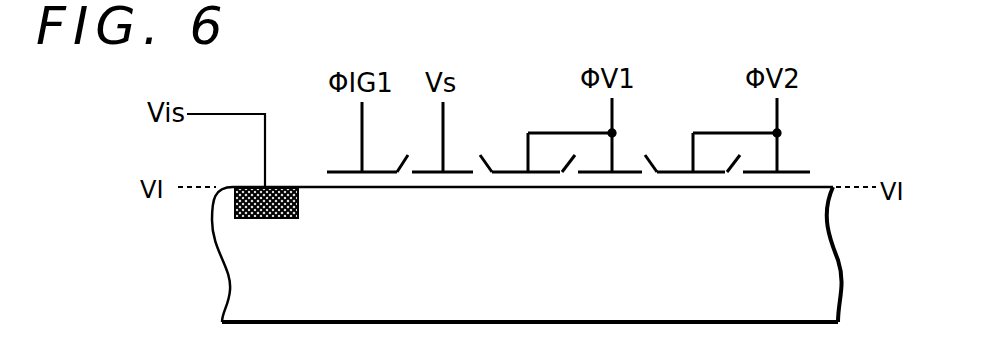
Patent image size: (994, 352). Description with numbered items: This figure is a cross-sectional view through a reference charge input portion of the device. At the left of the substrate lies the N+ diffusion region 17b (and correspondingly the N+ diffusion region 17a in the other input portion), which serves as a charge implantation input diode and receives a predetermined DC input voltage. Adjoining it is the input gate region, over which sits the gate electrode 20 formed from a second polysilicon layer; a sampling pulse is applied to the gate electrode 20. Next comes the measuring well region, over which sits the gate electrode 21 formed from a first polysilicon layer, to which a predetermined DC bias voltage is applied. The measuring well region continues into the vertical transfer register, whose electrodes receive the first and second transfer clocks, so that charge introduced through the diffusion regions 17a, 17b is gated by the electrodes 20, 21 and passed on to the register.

The N+ diffusion region 17b is at (361, 222).
The N+ diffusion region 17a is at (298, 208).
The gate electrode 20 is at (380, 172).
The gate electrode 21 is at (462, 172).